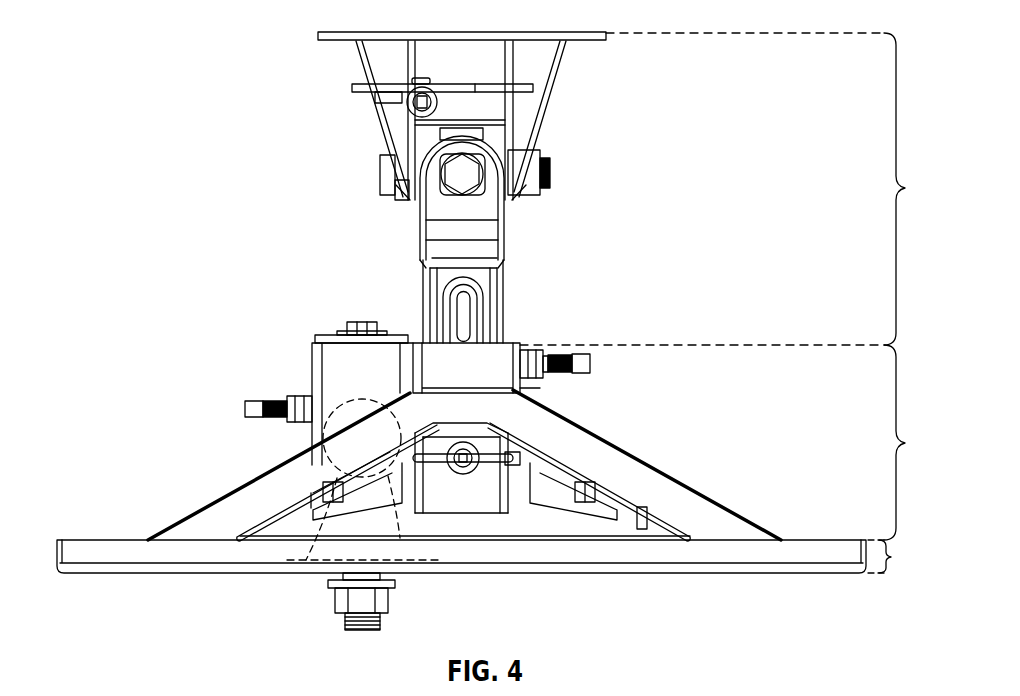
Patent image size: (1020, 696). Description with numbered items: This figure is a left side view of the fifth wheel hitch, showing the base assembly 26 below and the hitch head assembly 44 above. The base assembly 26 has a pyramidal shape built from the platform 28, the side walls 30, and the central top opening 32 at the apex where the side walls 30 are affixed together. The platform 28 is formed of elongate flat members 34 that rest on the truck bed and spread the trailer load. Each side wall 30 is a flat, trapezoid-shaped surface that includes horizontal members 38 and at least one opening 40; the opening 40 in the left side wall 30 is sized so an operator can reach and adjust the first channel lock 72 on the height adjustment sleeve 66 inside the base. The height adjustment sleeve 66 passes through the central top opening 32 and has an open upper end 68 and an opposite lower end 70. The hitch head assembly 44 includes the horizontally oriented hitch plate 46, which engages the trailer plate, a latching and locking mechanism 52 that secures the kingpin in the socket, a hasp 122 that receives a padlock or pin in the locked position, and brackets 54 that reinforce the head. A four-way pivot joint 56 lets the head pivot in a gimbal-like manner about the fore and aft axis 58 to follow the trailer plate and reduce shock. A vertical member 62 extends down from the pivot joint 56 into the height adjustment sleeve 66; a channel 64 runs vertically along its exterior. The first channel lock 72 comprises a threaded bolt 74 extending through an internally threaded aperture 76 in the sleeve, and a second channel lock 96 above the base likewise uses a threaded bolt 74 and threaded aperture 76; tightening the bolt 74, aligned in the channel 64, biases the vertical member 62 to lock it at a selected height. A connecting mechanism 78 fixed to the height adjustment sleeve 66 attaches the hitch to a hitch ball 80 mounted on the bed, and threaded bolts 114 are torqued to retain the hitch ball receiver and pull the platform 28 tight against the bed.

The base assembly 26 is at (732, 442).
The platform 28 is at (896, 556).
The side walls 30 is at (232, 505).
The central top opening 32 is at (335, 338).
The flat members 34 is at (711, 573).
The horizontal members 38 is at (276, 470).
The opening 40 is at (323, 490).
The hitch head assembly 44 is at (775, 189).
The hitch plate 46 is at (387, 31).
The latching and locking mechanism 52 is at (340, 90).
The brackets 54 is at (357, 50).
The four-way pivot joint 56 is at (398, 198).
The fore and aft axis 58 is at (403, 221).
The vertical member 62 is at (514, 212).
The channel 64 is at (462, 332).
The height adjustment sleeve 66 is at (453, 424).
The open upper end 68 is at (513, 343).
The closed lower end 70 is at (530, 470).
The first channel lock 72 is at (485, 472).
The threaded bolt 74 is at (591, 364).
The internally threaded aperture 76 is at (538, 396).
The connecting mechanism 78 is at (331, 435).
The hitch ball 80 is at (351, 414).
The second channel lock 96 is at (547, 381).
The threaded bolts 114 is at (353, 321).
The hasp 122 is at (378, 121).